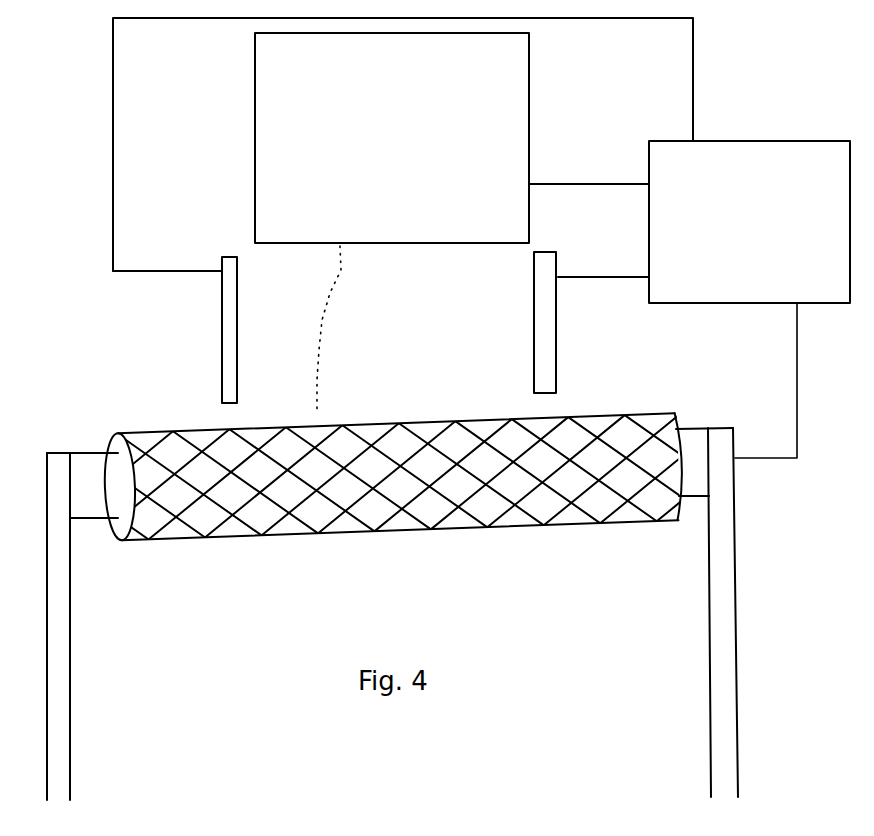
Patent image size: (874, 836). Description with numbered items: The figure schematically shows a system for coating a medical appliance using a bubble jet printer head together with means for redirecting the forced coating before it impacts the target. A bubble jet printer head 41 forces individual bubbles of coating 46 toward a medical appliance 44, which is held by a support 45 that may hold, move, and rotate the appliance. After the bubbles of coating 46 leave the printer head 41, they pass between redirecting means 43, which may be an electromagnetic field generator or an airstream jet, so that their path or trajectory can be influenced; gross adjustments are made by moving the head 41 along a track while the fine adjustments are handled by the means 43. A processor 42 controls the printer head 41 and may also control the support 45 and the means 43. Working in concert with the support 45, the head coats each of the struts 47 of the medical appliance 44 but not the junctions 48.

The bubble jet printer head 41 is at (446, 218).
The processor 42 is at (740, 286).
The redirecting means 43 is at (232, 343).
The medical appliance 44 is at (393, 477).
The support 45 is at (732, 684).
The bubbles of coating 46 is at (334, 283).
The struts 47 is at (418, 503).
The junctions 48 is at (562, 502).